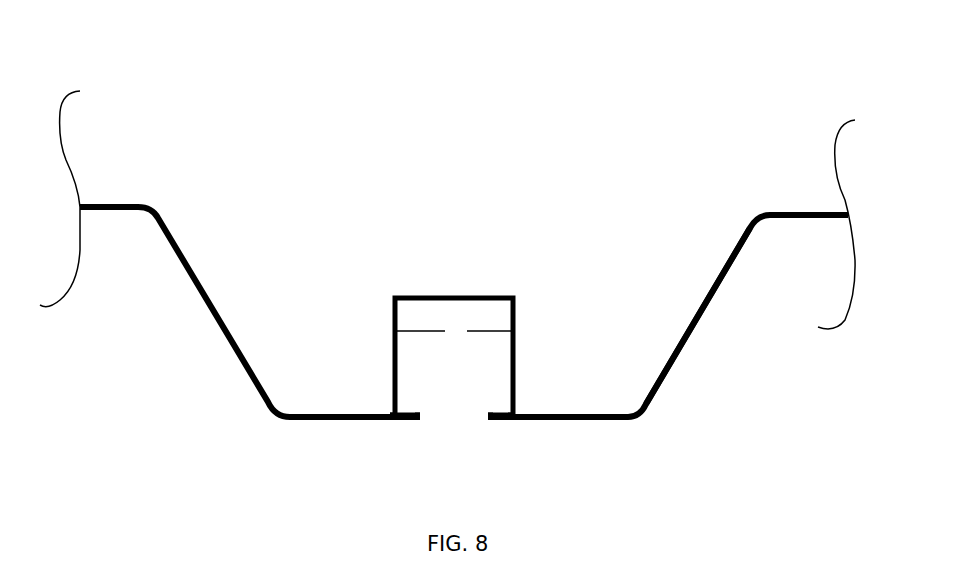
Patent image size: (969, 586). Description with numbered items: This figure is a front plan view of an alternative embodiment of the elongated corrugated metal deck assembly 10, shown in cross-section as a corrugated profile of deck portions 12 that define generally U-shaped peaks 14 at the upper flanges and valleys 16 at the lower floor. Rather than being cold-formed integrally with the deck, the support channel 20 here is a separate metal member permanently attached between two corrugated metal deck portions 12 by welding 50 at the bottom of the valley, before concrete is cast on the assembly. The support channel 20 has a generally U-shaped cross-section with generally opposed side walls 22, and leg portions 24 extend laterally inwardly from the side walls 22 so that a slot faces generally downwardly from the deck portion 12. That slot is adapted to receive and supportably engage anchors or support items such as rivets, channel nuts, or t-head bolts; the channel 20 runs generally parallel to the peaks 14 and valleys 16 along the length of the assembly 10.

The corrugated metal deck assembly 10 is at (777, 196).
The deck portion 12 is at (728, 250).
The peaks 14 is at (760, 206).
The valleys 16 is at (619, 408).
The support channel 20 is at (379, 312).
The side walls 22 is at (454, 332).
The leg portions 24 is at (489, 421).
The welding 50 is at (510, 421).